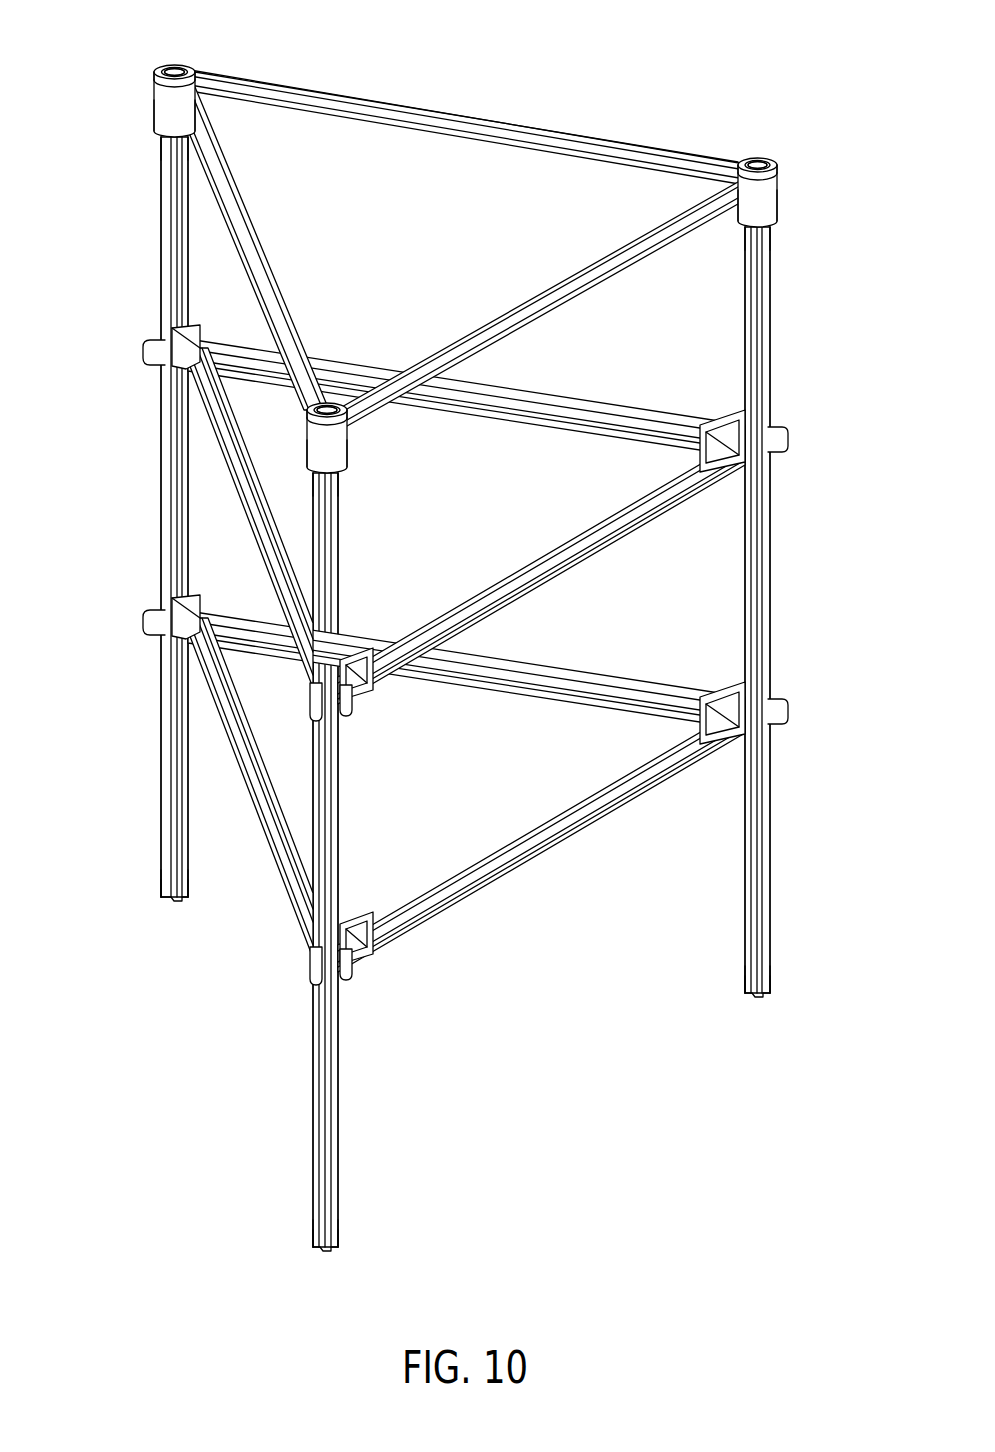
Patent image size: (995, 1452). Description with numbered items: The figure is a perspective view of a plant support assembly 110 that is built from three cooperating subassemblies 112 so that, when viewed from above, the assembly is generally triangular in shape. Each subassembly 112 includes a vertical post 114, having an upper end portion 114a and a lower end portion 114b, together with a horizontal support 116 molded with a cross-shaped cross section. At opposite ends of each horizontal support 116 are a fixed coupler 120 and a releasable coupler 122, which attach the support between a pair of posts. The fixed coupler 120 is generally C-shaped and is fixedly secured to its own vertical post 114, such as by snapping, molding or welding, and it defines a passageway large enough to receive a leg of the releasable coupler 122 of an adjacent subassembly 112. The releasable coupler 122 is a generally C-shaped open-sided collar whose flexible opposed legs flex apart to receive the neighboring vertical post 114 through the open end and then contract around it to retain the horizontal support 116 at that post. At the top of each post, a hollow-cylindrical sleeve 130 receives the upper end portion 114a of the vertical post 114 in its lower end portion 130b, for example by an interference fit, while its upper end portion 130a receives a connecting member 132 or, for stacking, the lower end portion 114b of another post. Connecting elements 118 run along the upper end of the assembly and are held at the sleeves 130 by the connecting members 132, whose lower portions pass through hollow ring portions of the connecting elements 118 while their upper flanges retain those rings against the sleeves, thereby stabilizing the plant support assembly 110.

The plant support assembly 110 is at (666, 72).
The subassembly 112 is at (150, 940).
The vertical post 114 is at (160, 470).
The upper end portion of vertical post 114a is at (161, 149).
The lower end portion of vertical post 114b is at (151, 872).
The horizontal support 116 is at (212, 405).
The connecting element 118 is at (462, 120).
The fixed coupler 120 is at (190, 345).
The releasable coupler 122 is at (160, 351).
The sleeve 130 is at (160, 108).
The upper end portion of sleeve 130a is at (150, 71).
The lower end portion of sleeve 130b is at (148, 126).
The connecting member 132 is at (173, 66).